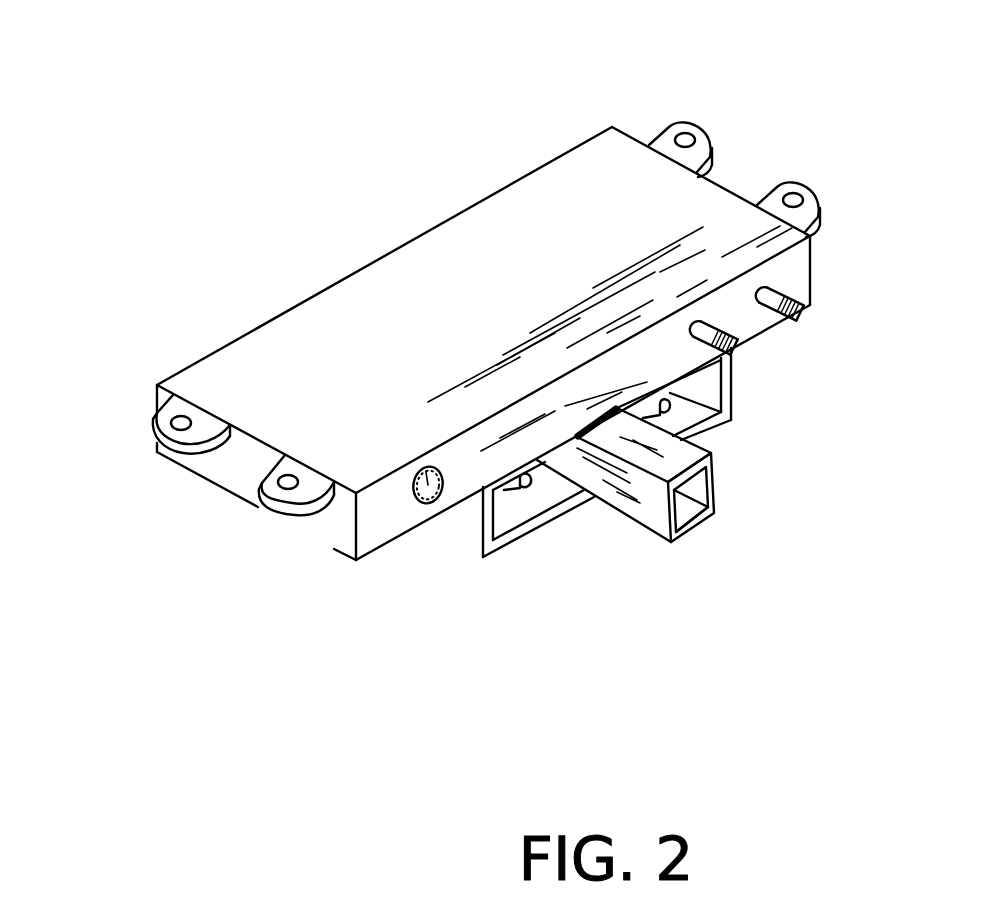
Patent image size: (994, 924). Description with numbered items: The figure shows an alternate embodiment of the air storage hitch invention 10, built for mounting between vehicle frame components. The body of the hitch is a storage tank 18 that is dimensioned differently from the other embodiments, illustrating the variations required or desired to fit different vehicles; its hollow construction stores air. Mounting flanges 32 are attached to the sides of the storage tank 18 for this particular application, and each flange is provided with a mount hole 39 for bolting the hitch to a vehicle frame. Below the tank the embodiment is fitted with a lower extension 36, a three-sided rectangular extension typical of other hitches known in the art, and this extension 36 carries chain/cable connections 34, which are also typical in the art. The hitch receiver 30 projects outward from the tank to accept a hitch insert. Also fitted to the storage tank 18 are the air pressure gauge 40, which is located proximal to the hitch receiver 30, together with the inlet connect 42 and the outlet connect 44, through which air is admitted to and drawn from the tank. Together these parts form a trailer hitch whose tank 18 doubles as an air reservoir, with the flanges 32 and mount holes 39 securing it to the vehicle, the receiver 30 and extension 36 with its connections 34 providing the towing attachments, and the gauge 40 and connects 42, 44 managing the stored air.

The invention 10 is at (475, 326).
The storage tank 18 is at (272, 320).
The hitch receiver 30 is at (718, 497).
The mounting flanges 32 is at (155, 437).
The chain/cable connections 34 is at (535, 494).
The lower extension 36 is at (507, 548).
The mount hole 39 is at (793, 201).
The air pressure gauge 40 is at (431, 503).
The inlet connect 42 is at (733, 349).
The outlet connect 44 is at (799, 313).